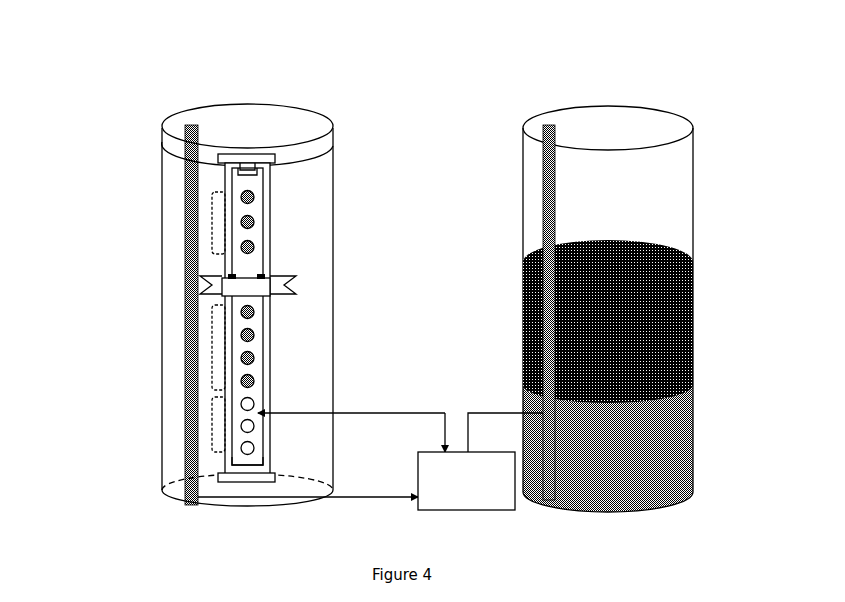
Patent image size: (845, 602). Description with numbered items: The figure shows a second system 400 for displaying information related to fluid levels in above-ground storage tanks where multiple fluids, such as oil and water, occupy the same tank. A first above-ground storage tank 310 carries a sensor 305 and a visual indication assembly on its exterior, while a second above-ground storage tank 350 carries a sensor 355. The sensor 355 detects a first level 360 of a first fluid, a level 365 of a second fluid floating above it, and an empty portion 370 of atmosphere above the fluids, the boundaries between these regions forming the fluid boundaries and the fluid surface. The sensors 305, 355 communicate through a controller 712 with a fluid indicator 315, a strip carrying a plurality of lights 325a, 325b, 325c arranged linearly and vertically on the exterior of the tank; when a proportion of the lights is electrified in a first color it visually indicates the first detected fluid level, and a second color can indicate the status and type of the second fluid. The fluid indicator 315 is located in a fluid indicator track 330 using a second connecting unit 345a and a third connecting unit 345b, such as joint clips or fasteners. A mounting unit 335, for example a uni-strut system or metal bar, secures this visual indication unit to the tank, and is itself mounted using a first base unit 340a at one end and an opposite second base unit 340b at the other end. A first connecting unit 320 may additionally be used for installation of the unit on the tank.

The second system 400 is at (57, 72).
The sensor 305 is at (195, 126).
The above-ground storage tank 310 is at (336, 270).
The fluid indicator 315 is at (262, 343).
The first connecting unit 320 is at (264, 277).
The light 325a is at (212, 222).
The light 325b is at (212, 345).
The light 325c is at (212, 425).
The fluid indicator track 330 is at (262, 218).
The mounting unit 335 is at (232, 170).
The first base unit 340a is at (218, 158).
The second base unit 340b is at (218, 478).
The second connecting unit 345a is at (270, 168).
The third connecting unit 345b is at (263, 463).
The above-ground storage tank 350 is at (693, 241).
The sensor 355 is at (553, 130).
The first fluid level 360 is at (690, 438).
The second fluid level 365 is at (690, 322).
The empty portion 370 is at (693, 196).
The controller 712 is at (466, 481).